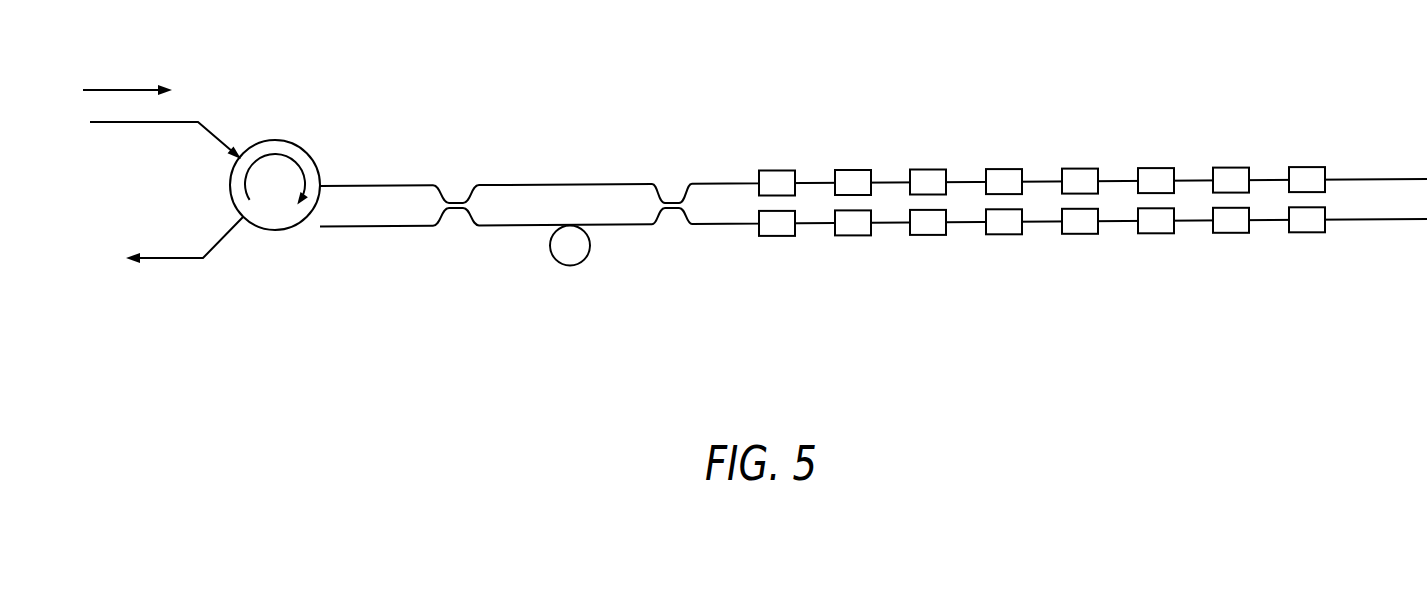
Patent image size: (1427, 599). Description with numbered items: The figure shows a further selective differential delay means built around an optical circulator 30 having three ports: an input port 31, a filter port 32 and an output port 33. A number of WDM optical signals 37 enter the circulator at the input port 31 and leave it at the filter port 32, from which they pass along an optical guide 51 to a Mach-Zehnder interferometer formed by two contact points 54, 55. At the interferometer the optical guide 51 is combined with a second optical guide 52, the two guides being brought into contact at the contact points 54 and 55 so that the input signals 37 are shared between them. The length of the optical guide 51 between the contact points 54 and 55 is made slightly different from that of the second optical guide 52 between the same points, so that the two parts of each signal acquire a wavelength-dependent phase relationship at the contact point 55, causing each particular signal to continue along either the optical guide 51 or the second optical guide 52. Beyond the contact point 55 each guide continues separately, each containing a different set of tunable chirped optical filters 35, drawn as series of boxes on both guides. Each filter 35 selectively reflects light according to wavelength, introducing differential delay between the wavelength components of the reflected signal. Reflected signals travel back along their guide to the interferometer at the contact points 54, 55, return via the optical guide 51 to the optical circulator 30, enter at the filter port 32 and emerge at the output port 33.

The optical circulator 30 is at (322, 130).
The input port 31 is at (240, 158).
The filter port 32 is at (321, 188).
The output port 33 is at (250, 224).
The tunable chirped optical filters 35 is at (1002, 234).
The WDM optical signals 37 is at (130, 90).
The optical guide 51 is at (398, 186).
The second optical guide 52 is at (403, 227).
The contact point 54 is at (453, 209).
The contact point 55 is at (670, 209).